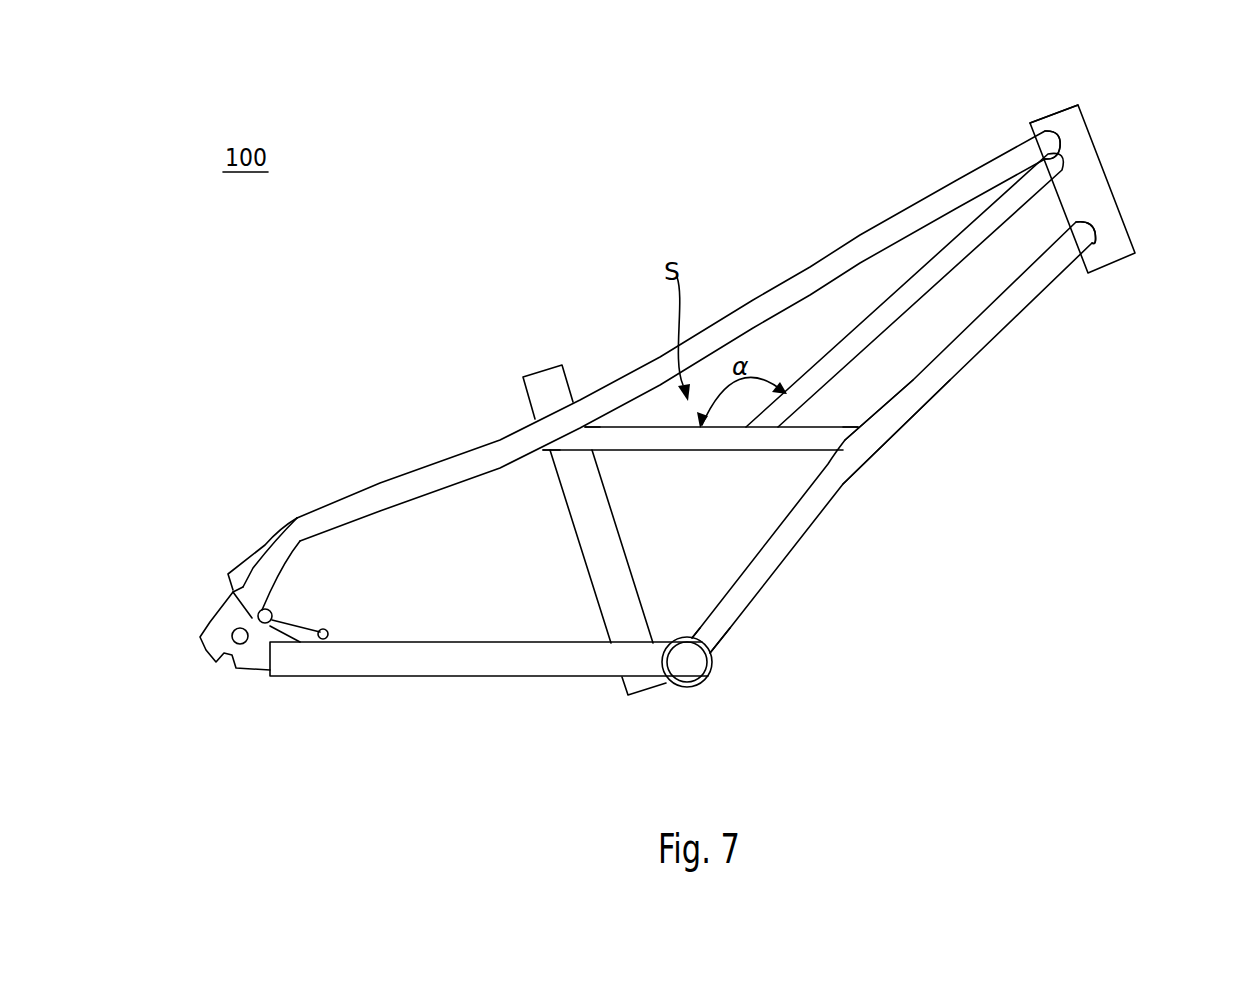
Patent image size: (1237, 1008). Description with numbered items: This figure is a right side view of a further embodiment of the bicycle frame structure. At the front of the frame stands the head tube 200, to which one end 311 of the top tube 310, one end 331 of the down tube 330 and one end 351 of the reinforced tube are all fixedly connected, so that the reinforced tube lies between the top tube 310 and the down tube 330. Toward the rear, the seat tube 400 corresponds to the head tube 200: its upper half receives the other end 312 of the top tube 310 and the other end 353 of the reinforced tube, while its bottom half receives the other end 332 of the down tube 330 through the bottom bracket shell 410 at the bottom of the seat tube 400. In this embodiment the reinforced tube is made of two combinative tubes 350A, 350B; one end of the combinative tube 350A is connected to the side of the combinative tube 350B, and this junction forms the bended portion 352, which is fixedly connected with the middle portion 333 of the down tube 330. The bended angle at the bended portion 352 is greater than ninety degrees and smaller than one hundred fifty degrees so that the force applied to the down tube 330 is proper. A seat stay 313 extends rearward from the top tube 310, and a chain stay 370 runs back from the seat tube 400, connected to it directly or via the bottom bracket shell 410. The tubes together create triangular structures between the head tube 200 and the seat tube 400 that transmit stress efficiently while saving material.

The head tube 200 is at (1098, 184).
The top tube 310 is at (792, 290).
The end of top tube 311 is at (1052, 122).
The other end of top tube 312 is at (590, 408).
The seat stay 313 is at (256, 545).
The down tube 330 is at (808, 513).
The end of down tube 331 is at (1085, 232).
The other end of down tube 332 is at (717, 630).
The middle portion of down tube 333 is at (860, 445).
The combinative tube 350A is at (913, 292).
The combinative tube 350B is at (715, 442).
The end of reinforced tube 351 is at (1060, 146).
The bended portion 352 is at (843, 424).
The other end of reinforced tube 353 is at (580, 440).
The chain stay 370 is at (447, 677).
The seat tube 400 is at (540, 378).
The bottom bracket shell 410 is at (688, 665).